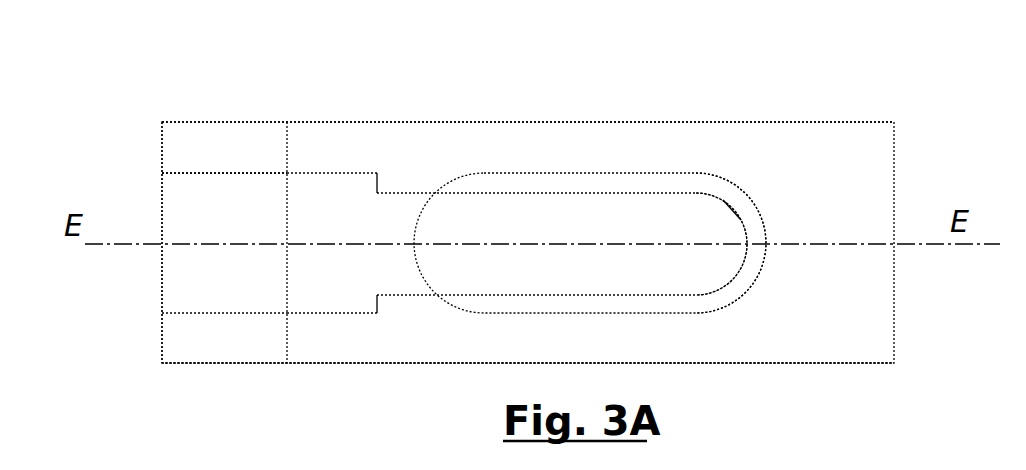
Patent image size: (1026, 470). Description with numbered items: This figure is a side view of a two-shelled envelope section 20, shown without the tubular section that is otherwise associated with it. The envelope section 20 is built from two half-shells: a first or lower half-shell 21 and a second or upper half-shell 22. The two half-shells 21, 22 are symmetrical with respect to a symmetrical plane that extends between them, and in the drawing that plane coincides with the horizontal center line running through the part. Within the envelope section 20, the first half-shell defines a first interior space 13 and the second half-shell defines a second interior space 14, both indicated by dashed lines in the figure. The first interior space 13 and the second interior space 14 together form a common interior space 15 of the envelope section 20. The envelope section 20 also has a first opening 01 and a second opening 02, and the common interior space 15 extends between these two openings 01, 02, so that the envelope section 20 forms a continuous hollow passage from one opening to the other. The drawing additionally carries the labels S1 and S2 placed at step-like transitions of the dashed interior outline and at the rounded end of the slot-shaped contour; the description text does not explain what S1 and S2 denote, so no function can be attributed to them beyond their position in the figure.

The first opening 01 is at (690, 275).
The second opening 02 is at (185, 205).
The first interior space 13 is at (346, 282).
The second interior space 14 is at (346, 194).
The common interior space 15 is at (243, 273).
The two-shell envelope section 20 is at (772, 111).
The first or lower half-shell 21 is at (745, 340).
The second or upper half-shell 22 is at (693, 136).
The first clearance S1 is at (743, 211).
The second clearance S2 is at (378, 182).